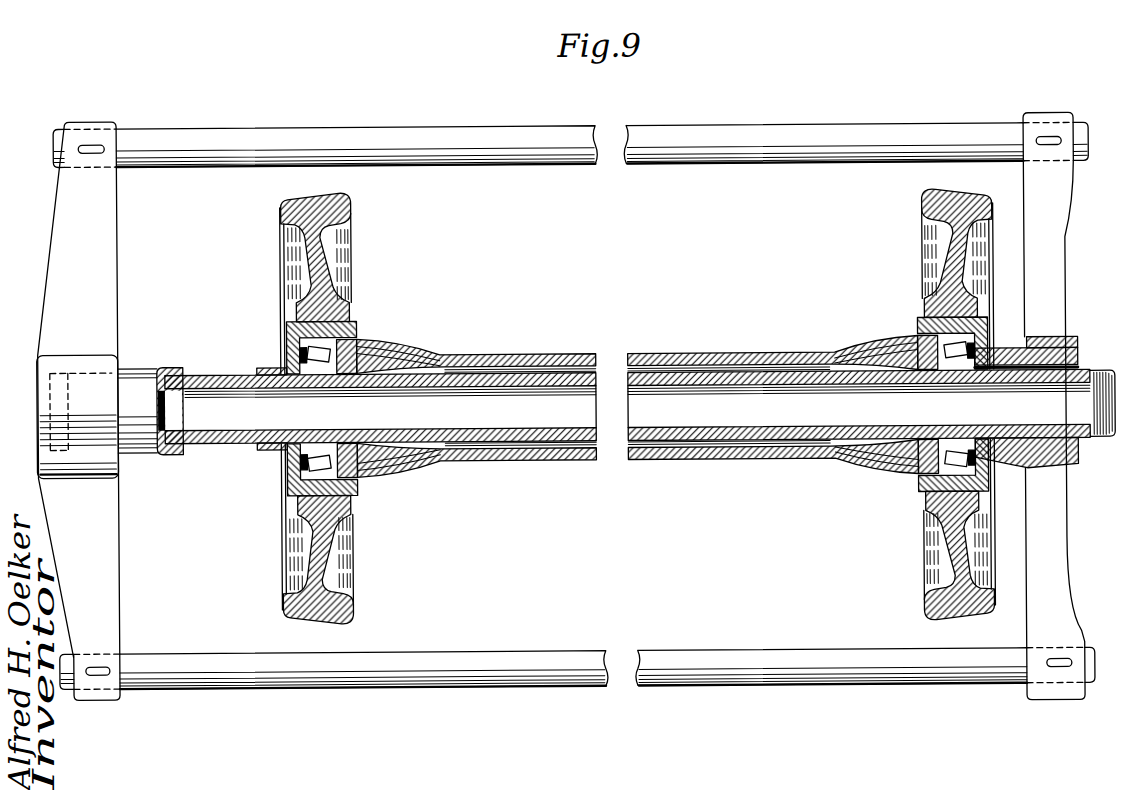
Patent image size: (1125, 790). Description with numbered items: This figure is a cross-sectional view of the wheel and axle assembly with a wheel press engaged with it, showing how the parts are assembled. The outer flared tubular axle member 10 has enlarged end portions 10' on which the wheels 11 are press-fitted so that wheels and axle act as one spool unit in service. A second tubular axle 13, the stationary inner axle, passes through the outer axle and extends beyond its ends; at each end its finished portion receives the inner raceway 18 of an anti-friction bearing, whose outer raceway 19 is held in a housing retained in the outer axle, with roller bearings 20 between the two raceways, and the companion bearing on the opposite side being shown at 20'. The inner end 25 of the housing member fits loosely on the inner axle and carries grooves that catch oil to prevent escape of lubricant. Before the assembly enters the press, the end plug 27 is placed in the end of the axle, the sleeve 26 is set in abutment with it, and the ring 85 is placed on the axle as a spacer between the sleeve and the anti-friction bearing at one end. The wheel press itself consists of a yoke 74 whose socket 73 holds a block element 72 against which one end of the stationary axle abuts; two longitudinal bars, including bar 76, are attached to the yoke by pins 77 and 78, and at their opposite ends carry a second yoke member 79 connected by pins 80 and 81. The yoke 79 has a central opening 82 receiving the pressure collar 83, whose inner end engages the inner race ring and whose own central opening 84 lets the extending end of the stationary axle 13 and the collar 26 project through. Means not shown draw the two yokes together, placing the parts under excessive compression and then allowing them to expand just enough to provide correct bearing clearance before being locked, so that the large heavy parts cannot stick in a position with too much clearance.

The outer flared tubular axle member 10 is at (475, 350).
The enlarged end portion 10' is at (618, 337).
The wheel 11 is at (352, 199).
The second tubular axle 13 is at (505, 386).
The inner raceway 18 is at (373, 352).
The outer raceway 19 is at (355, 344).
The roller bearings 20 is at (441, 471).
The lower bearing housing 20' is at (808, 467).
The inner end of housing member 25 is at (327, 126).
The sleeve 26 is at (255, 366).
The end plug 27 is at (163, 367).
The block element 72 is at (133, 380).
The socket 73 is at (59, 392).
The yoke 74 is at (54, 300).
The longitudinal bar 76 is at (325, 680).
The pin 77 is at (101, 141).
The pin 78 is at (103, 693).
The second yoke member 79 is at (1059, 259).
The pin 80 is at (1051, 145).
The pin 81 is at (1057, 671).
The central opening 82 is at (1082, 451).
The pressure collar 83 is at (1012, 349).
The central opening 84 is at (1083, 361).
The ring 85 is at (288, 450).